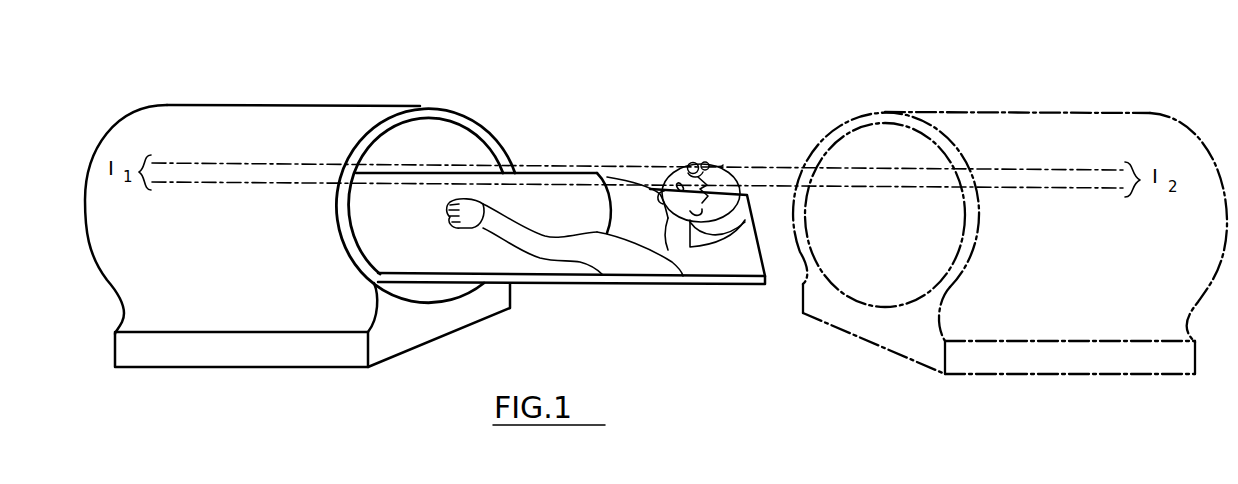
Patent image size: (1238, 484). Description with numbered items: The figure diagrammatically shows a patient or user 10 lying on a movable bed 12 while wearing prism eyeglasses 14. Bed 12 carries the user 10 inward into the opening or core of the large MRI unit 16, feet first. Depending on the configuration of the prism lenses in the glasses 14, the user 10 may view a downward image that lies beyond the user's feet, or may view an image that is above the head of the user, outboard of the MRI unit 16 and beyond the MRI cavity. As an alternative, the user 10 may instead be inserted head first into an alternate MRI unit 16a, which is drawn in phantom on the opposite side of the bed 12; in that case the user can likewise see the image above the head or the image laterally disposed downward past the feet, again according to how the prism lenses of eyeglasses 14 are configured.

The user 10 is at (665, 248).
The movable bed 12 is at (747, 286).
The eyeglasses 14 is at (723, 165).
The MRI unit 16 is at (332, 104).
The alternate MRI unit 16a is at (1048, 112).